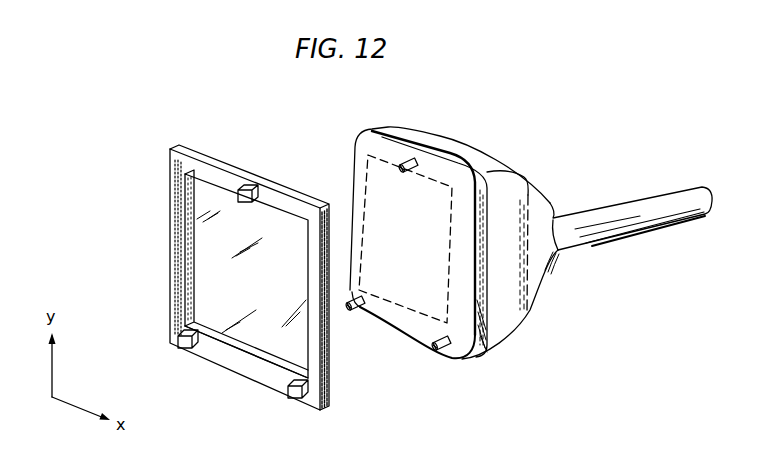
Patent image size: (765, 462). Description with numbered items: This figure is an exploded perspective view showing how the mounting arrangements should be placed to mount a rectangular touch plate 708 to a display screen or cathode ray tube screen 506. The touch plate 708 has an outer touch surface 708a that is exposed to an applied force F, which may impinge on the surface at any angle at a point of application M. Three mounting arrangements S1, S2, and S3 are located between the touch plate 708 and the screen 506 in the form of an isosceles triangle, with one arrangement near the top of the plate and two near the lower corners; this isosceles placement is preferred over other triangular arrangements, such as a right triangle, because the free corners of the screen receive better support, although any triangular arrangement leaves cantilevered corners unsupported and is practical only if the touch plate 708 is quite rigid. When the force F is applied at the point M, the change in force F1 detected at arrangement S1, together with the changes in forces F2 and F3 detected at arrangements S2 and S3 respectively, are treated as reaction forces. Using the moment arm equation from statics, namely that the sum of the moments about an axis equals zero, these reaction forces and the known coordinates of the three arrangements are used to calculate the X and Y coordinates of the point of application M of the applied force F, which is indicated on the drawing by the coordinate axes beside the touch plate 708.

The touch plate 708 is at (186, 160).
The outer touch surface 708a is at (245, 333).
The cathode ray tube screen 506 is at (545, 210).
The first mounting arrangement S1 is at (400, 166).
The second mounting arrangement S2 is at (348, 303).
The third mounting arrangement S3 is at (433, 351).
The force detected at first arrangement F1 is at (231, 190).
The force detected at second arrangement F2 is at (169, 346).
The force detected at third arrangement F3 is at (281, 398).
The applied force F is at (213, 280).
The point of application M is at (221, 271).